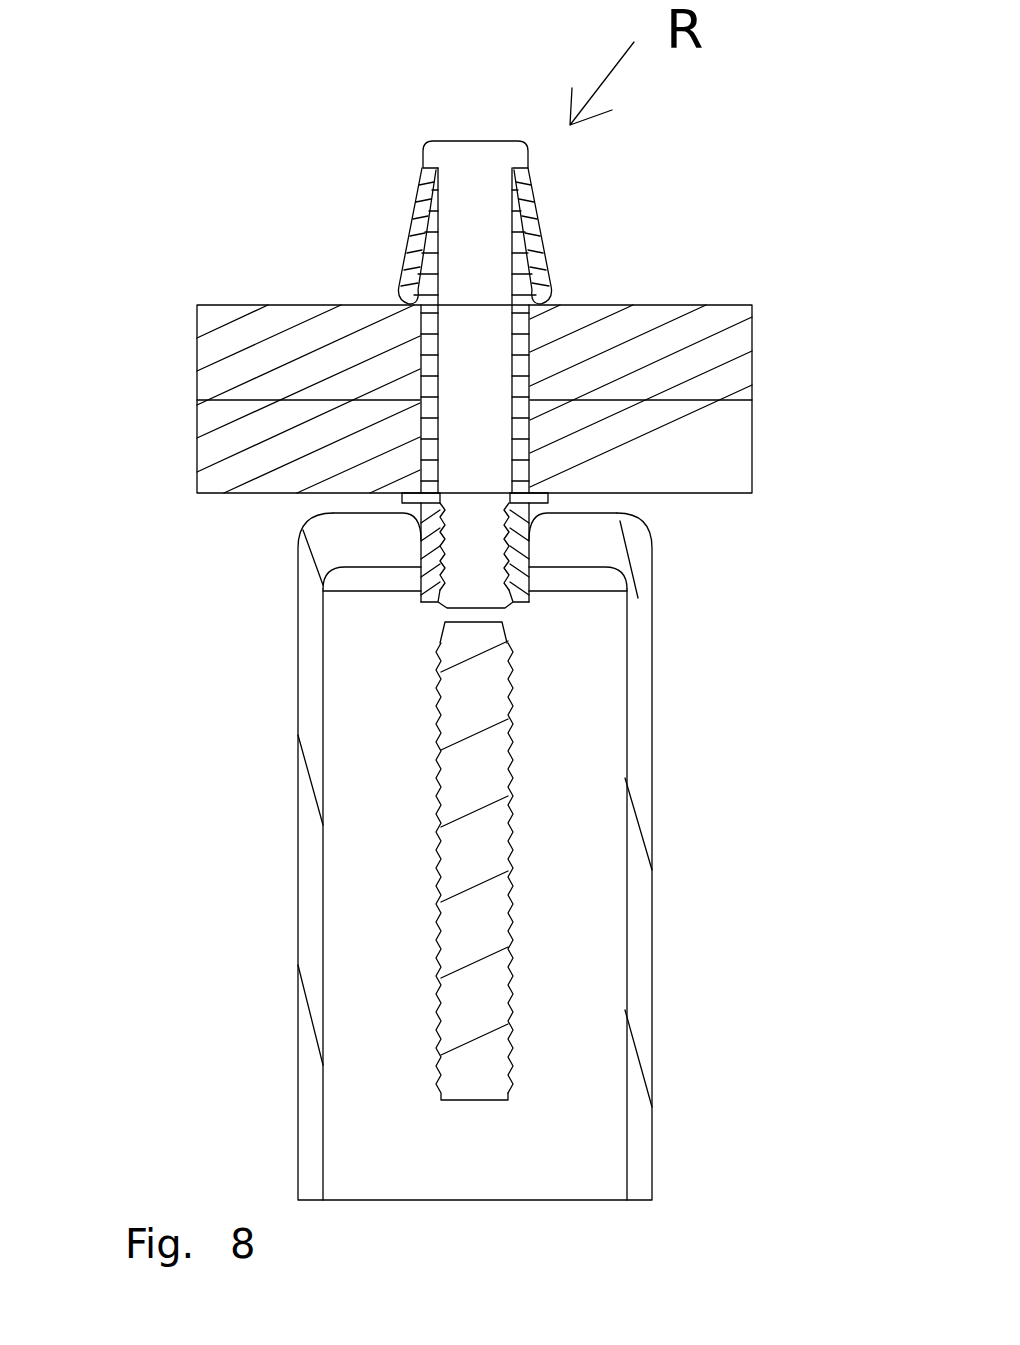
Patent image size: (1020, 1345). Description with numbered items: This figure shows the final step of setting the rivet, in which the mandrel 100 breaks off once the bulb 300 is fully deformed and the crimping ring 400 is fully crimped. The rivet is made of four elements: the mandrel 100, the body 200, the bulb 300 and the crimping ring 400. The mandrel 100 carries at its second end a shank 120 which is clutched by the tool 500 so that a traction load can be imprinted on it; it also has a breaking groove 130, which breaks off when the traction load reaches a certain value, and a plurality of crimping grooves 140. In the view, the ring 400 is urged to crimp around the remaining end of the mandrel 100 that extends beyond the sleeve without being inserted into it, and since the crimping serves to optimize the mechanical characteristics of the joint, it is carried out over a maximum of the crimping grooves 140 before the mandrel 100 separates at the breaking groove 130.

The mandrel 100 is at (478, 362).
The shank 120 is at (493, 902).
The breaking groove 130 is at (440, 613).
The crimping grooves 140 is at (436, 543).
The body 200 is at (524, 381).
The bulb 300 is at (530, 228).
The crimping ring 400 is at (509, 562).
The tool 500 is at (640, 765).